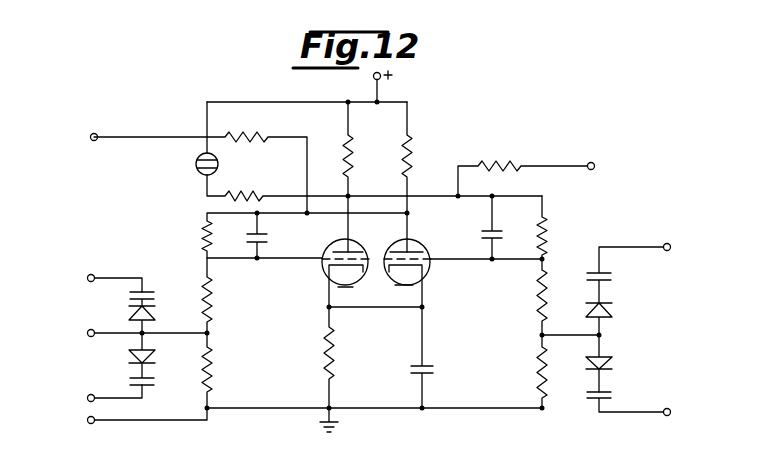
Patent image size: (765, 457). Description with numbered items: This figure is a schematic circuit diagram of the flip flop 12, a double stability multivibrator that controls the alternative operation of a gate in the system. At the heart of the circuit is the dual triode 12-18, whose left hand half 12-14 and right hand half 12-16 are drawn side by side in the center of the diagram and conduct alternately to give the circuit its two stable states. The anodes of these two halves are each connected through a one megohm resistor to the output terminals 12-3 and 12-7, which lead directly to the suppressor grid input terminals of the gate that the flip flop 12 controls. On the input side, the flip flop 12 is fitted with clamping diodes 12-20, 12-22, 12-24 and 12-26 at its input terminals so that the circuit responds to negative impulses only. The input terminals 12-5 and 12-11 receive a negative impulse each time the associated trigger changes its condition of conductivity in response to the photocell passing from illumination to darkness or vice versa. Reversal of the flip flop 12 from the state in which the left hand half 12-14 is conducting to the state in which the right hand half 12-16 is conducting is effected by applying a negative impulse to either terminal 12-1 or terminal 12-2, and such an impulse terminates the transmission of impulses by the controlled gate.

The flip flop 12 is at (450, 134).
The terminal 12-1 is at (88, 278).
The terminal 12-2 is at (88, 396).
The output terminal 12-3 is at (90, 137).
The input terminal 12-5 is at (678, 258).
The output terminal 12-7 is at (594, 167).
The input terminal 12-11 is at (667, 408).
The left hand half 12-14 is at (316, 273).
The right hand half 12-16 is at (430, 268).
The dual triode 12-18 is at (440, 221).
The clamping diode 12-20 is at (129, 352).
The clamping diode 12-22 is at (129, 312).
The clamping diode 12-24 is at (612, 361).
The clamping diode 12-26 is at (612, 310).